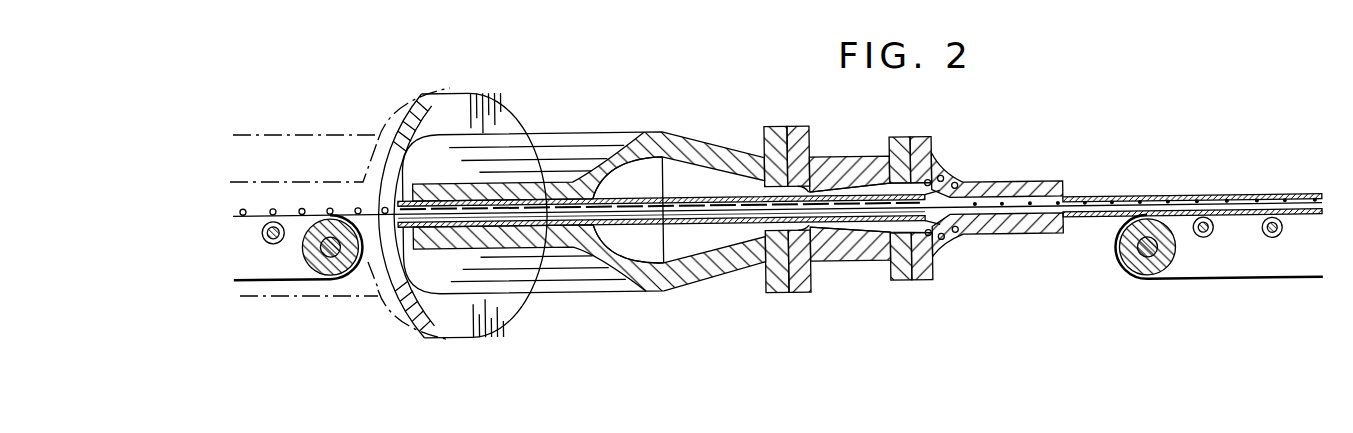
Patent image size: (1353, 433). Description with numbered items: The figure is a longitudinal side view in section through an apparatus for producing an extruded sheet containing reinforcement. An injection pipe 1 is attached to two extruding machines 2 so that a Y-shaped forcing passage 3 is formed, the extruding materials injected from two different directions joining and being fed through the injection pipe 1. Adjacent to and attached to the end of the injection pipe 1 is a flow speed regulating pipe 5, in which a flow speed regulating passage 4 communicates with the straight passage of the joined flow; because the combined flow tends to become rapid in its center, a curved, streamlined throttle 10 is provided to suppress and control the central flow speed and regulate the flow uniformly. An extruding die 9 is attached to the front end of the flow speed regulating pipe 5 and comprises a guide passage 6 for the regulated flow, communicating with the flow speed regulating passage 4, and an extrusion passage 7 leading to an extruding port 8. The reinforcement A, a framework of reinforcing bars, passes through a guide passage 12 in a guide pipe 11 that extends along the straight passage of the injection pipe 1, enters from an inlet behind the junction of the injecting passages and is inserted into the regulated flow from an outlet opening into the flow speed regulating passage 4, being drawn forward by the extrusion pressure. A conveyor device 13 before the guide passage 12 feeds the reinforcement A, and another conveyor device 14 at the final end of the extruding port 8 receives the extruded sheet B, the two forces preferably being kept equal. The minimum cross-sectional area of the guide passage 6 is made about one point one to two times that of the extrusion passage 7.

The injection pipe 1 is at (585, 143).
The extruding machine 2 is at (322, 136).
The forcing passage 3 is at (637, 178).
The flow speed regulating passage 4 is at (866, 187).
The flow speed regulating pipe 5 is at (845, 163).
The guide passage for regulated flow 6 is at (925, 168).
The extrusion passage 7 is at (1015, 222).
The extruding port 8 is at (1062, 196).
The extruding die 9 is at (1006, 183).
The throttle 10 is at (807, 187).
The guide pipe 11 is at (690, 200).
The guide passage 12 is at (730, 203).
The conveyor device 13 is at (316, 278).
The conveyor device 14 is at (1195, 275).
The reinforcement A is at (273, 212).
The extruded sheet B is at (1178, 194).